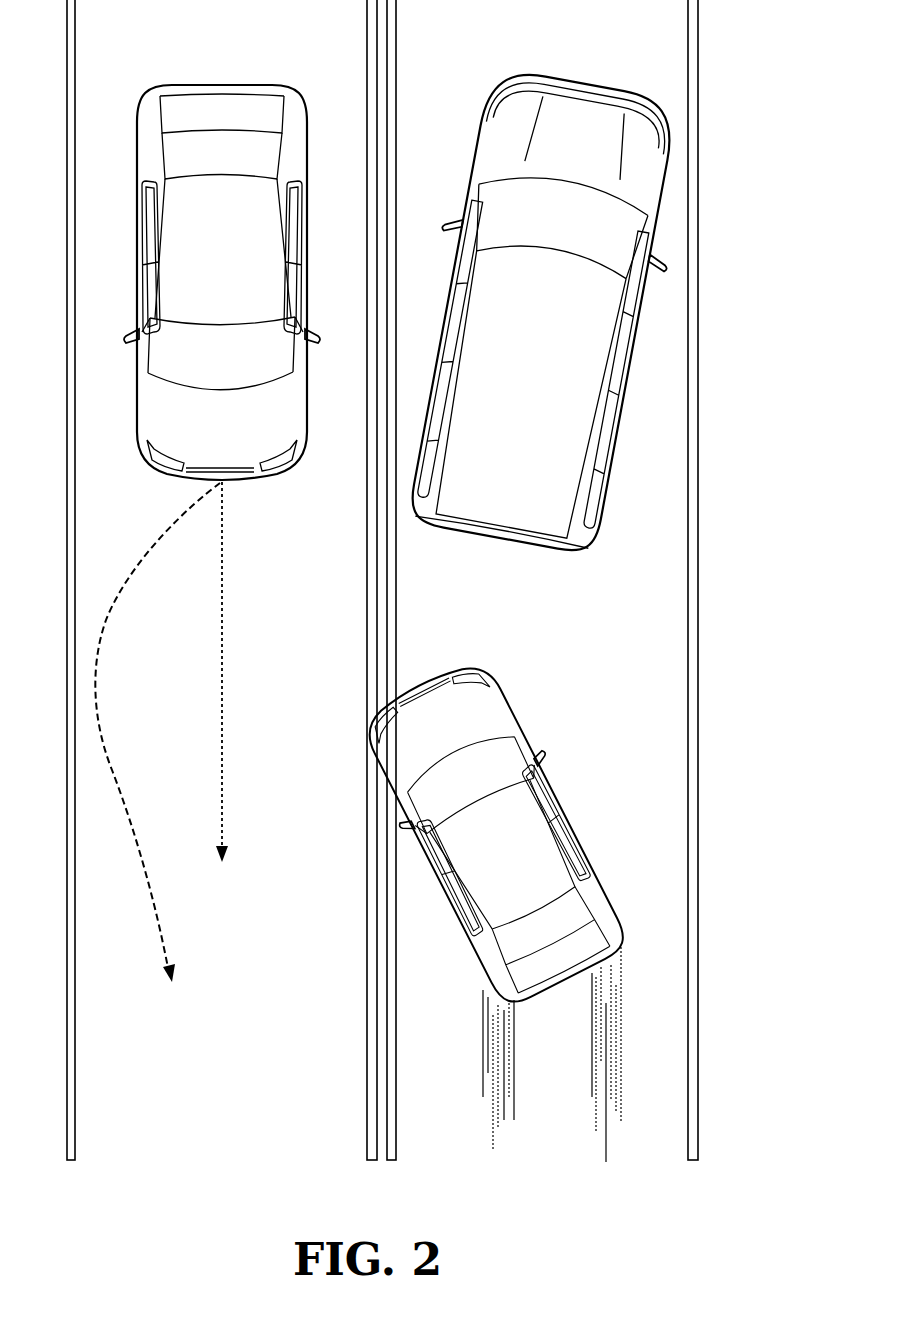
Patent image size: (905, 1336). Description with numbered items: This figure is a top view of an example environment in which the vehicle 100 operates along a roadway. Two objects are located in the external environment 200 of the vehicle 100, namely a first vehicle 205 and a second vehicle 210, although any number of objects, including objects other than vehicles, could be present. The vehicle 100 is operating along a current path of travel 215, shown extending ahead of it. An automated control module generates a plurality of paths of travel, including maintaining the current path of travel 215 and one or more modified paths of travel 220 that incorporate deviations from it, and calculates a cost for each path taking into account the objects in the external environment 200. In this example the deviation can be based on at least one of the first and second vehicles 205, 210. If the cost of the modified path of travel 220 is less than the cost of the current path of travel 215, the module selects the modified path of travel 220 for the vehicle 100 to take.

The vehicle 100 is at (141, 118).
The external environment 200 is at (455, 25).
The first vehicle 205 is at (664, 196).
The second vehicle 210 is at (560, 798).
The current path of travel 215 is at (222, 592).
The modified path of travel 220 is at (126, 583).